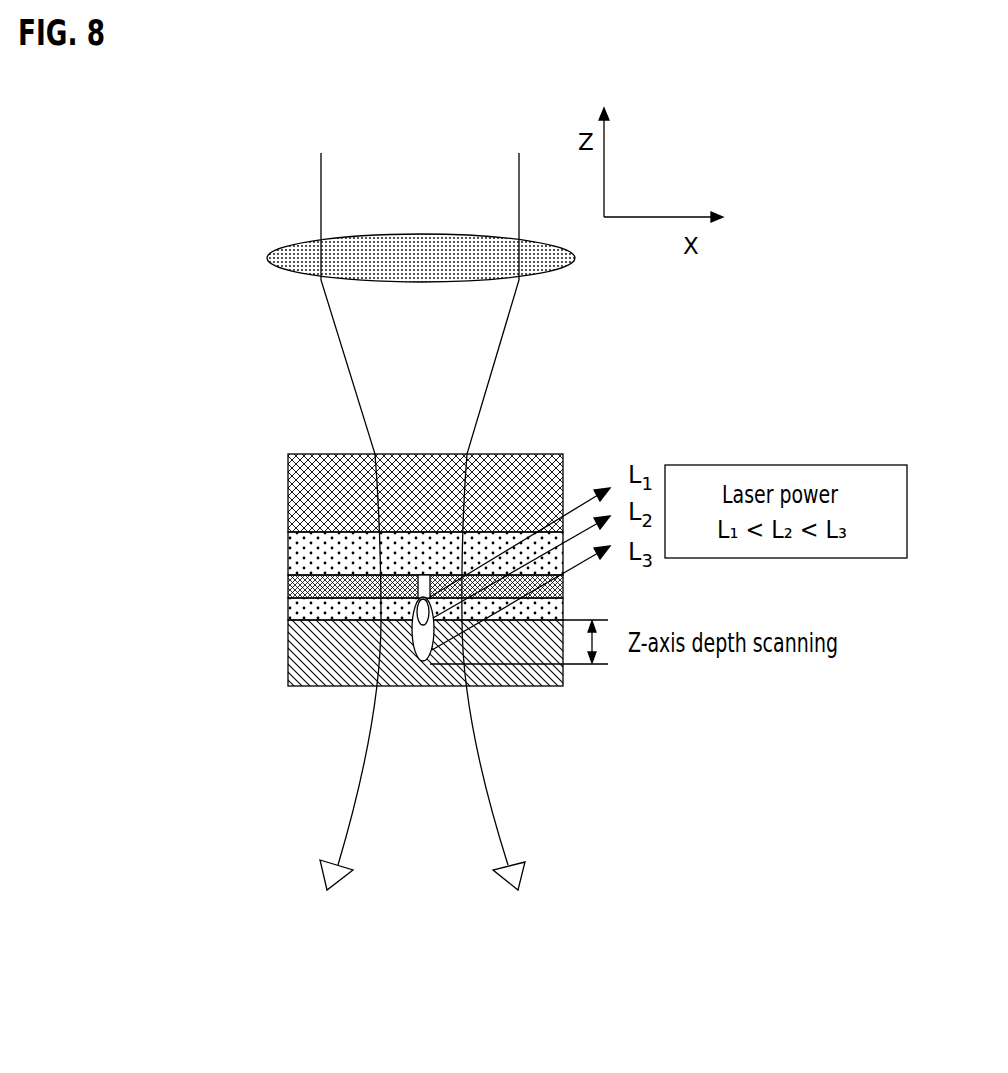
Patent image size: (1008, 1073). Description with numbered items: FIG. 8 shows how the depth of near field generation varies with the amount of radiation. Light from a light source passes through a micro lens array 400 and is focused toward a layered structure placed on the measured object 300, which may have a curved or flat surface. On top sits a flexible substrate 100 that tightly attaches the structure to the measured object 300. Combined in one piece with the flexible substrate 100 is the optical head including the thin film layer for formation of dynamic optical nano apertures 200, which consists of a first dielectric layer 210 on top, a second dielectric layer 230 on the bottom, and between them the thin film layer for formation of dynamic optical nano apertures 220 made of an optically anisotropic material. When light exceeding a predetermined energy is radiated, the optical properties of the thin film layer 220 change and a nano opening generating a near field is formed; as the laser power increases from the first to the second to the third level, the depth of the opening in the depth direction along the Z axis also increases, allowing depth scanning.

The flexible substrate 100 is at (288, 487).
The thin film layer for formation of dynamic optical nano apertures 200 is at (334, 584).
The first dielectric layer 210 is at (288, 563).
The thin film layer for formation of dynamic optical nano apertures 220 is at (288, 588).
The second dielectric layer 230 is at (375, 620).
The measured object 300 is at (288, 668).
The micro lens array 400 is at (287, 258).